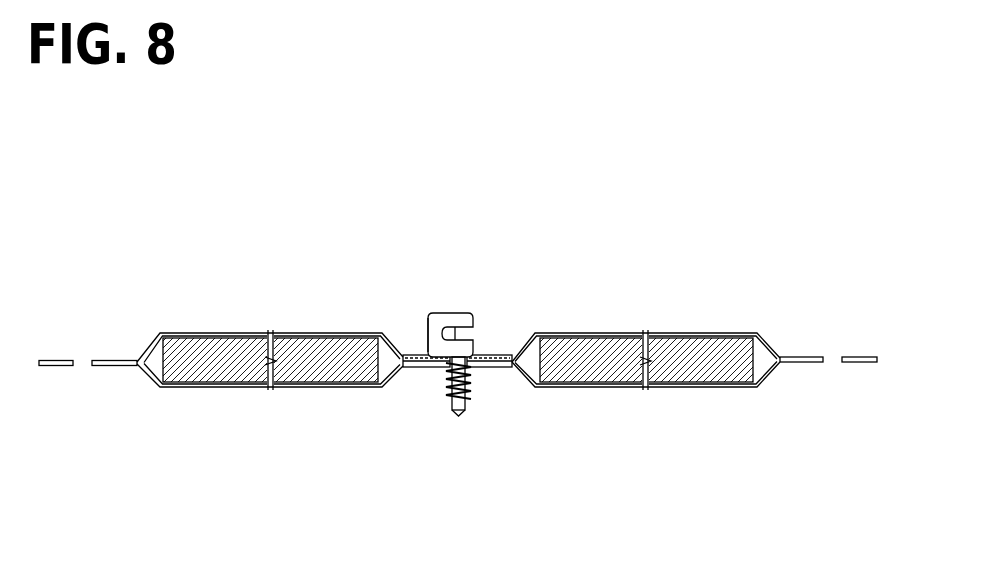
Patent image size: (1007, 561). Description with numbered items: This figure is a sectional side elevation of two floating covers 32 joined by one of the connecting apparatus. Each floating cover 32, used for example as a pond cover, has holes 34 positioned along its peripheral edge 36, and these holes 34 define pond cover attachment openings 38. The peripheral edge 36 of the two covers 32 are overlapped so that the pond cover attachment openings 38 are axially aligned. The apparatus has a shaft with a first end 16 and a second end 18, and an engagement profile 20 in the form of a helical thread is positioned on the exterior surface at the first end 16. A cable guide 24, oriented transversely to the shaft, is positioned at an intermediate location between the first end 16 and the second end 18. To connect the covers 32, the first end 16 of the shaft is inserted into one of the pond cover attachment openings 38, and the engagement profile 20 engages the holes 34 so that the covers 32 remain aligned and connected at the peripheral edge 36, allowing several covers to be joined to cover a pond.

The first end 16 is at (461, 414).
The second end 18 is at (473, 325).
The engagement profile 20 is at (470, 400).
The cable guide 24 is at (428, 328).
The floating cover 32 is at (233, 335).
The hole 34 is at (500, 367).
The peripheral edge 36 is at (417, 355).
The pond cover attachment opening 38 is at (81, 366).